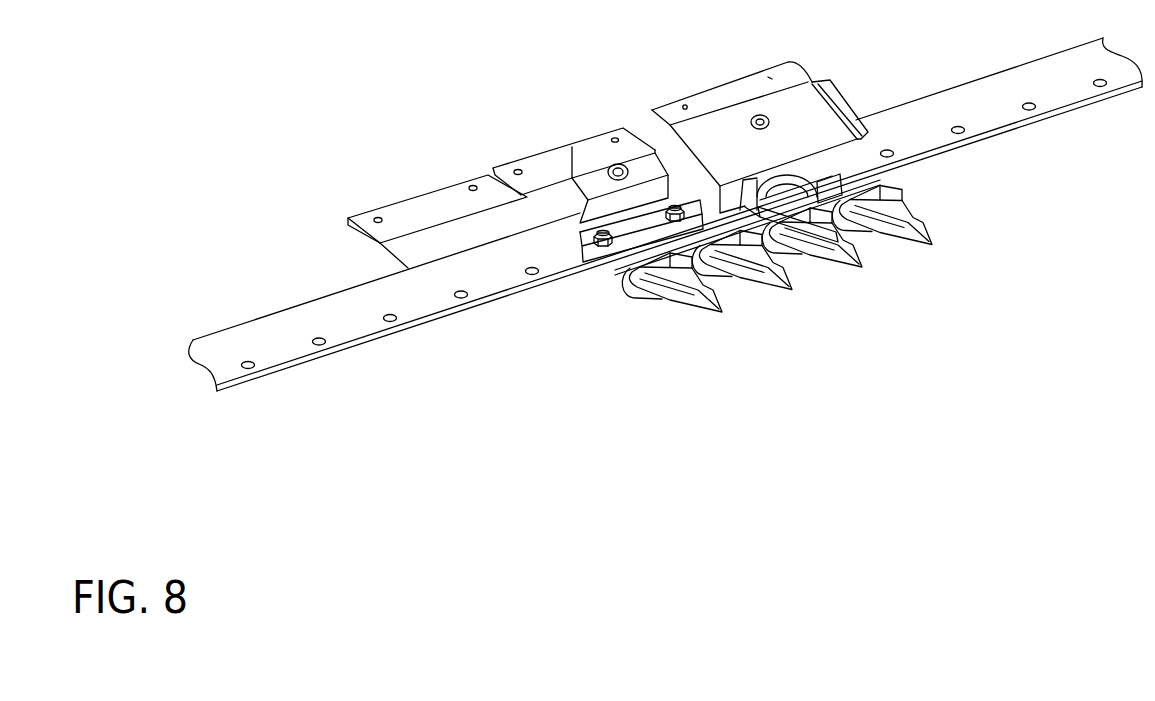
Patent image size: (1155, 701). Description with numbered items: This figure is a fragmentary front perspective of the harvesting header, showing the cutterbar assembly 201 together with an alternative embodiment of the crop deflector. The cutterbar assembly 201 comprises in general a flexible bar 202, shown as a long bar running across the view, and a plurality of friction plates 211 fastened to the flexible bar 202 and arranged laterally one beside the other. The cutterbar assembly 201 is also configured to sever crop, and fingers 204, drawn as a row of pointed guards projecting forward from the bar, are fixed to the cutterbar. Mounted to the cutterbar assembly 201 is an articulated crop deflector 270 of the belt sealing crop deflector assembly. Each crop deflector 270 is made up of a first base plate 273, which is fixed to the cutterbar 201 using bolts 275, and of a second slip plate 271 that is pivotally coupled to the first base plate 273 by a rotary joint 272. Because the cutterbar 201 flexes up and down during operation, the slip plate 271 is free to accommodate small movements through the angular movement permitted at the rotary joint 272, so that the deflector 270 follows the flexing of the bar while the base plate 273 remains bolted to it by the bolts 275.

The cutterbar assembly 201 is at (817, 289).
The flexible bar 202 is at (357, 300).
The fingers 204 is at (925, 215).
The friction plates 211 is at (428, 203).
The crop deflector 270 is at (662, 104).
The second slip plate 271 is at (800, 107).
The rotary joint 272 is at (757, 116).
The first base plate 273 is at (593, 178).
The bolts 275 is at (657, 220).